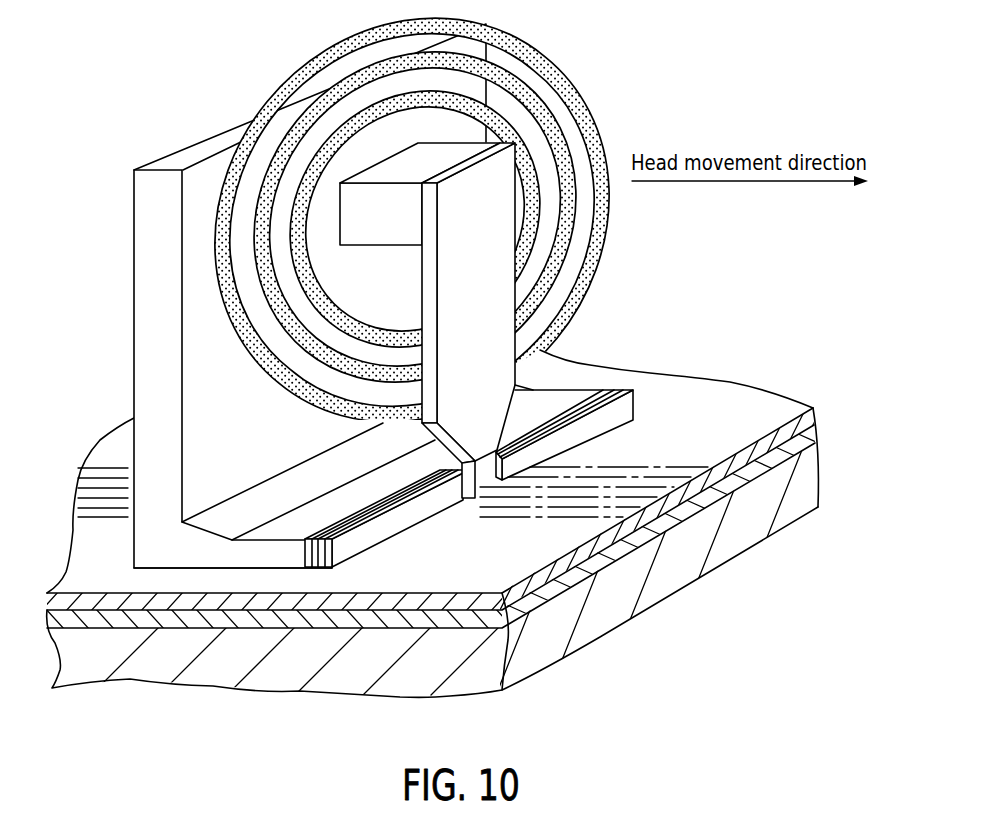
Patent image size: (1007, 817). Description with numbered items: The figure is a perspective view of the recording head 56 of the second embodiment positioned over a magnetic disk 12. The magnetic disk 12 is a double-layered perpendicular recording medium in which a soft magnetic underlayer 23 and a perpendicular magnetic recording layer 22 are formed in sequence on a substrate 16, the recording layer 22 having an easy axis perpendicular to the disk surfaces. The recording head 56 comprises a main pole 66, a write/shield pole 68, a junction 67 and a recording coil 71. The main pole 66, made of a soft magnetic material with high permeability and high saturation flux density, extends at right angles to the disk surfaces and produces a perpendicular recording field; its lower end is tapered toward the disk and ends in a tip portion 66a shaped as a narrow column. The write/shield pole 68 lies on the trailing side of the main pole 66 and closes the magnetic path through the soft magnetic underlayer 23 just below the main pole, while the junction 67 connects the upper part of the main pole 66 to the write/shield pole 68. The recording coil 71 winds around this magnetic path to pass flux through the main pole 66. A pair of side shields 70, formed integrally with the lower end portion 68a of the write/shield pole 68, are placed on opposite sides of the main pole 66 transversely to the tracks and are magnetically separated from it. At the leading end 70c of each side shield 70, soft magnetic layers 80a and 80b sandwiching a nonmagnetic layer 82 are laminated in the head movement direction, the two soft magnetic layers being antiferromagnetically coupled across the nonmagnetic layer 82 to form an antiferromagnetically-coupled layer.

The magnetic disk 12 is at (458, 516).
The substrate 16 is at (667, 588).
The perpendicular magnetic recording layer 22 is at (772, 402).
The soft magnetic underlayer 23 is at (728, 492).
The recording head 56 is at (389, 385).
The main pole 66 is at (540, 346).
The tip portion 66a is at (492, 482).
The junction 67 is at (375, 238).
The write/shield pole 68 is at (140, 286).
The lower end portion 68a is at (218, 556).
The side shield 70 is at (481, 533).
The leading end 70c is at (393, 527).
The recording coil 71 is at (602, 106).
The soft magnetic layer 80a is at (306, 553).
The soft magnetic layer 80b is at (347, 550).
The nonmagnetic layer 82 is at (318, 565).